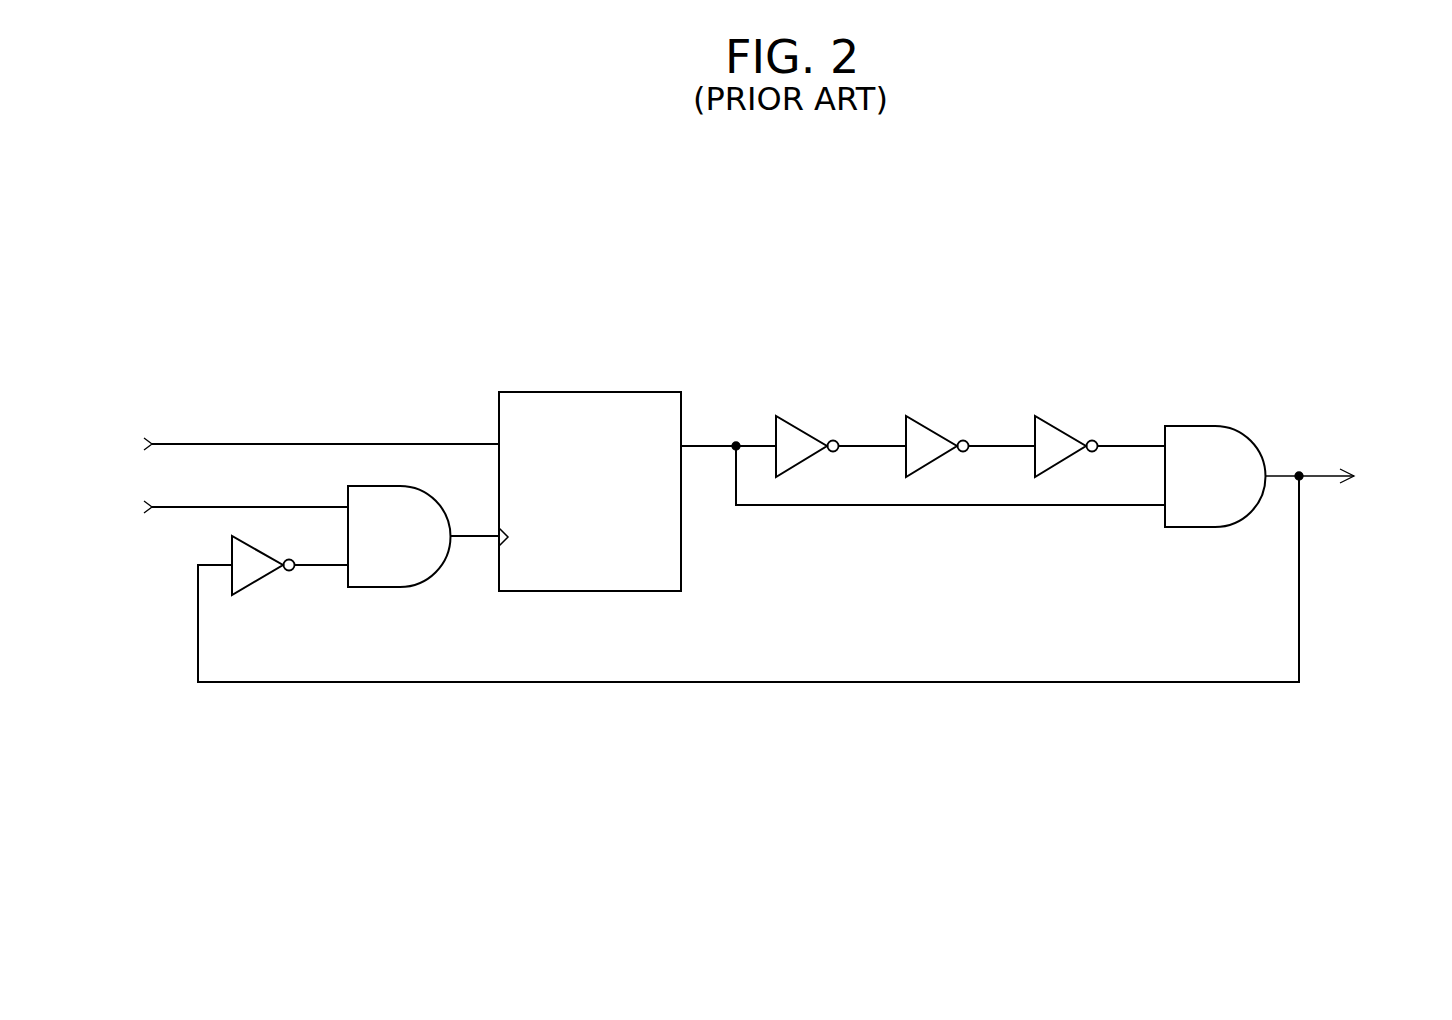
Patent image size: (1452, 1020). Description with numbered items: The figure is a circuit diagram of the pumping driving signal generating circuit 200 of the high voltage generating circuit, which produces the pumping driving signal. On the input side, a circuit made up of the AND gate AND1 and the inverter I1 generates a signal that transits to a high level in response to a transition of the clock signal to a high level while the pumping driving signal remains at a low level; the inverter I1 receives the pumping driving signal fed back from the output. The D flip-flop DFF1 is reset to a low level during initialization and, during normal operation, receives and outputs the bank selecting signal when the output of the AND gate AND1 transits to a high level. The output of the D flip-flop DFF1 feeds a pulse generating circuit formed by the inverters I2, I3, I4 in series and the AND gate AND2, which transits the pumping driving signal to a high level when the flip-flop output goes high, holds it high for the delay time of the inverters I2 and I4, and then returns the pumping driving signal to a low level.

The pumping driving signal generating circuit 200 is at (767, 444).
The inverter I1 is at (258, 583).
The AND gate AND1 is at (378, 589).
The D flip-flop DFF1 is at (635, 392).
The inverter I2 is at (800, 430).
The inverter I3 is at (930, 430).
The inverter I4 is at (1060, 430).
The AND gate AND2 is at (1198, 426).